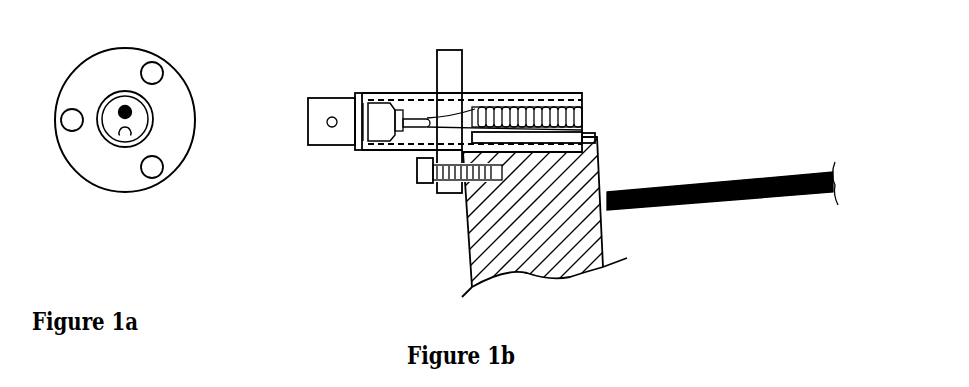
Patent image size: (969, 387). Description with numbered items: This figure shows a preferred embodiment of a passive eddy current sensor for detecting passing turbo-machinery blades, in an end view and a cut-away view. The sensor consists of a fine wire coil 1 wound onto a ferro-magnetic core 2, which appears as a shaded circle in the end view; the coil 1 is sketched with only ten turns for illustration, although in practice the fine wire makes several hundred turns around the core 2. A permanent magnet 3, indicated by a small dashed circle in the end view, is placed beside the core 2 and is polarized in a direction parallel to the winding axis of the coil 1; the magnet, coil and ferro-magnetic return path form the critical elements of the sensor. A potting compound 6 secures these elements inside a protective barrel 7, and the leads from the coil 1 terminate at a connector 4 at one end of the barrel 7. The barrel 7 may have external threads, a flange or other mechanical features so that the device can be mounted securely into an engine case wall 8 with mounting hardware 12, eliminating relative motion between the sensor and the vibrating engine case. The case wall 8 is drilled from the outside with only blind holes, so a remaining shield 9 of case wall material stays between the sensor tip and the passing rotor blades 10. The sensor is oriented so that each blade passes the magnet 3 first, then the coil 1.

The coil 1 is at (537, 106).
The core 2 is at (580, 113).
The magnet 3 is at (587, 125).
The connector 4 is at (352, 96).
The potting compound 6 is at (463, 105).
The barrel 7 is at (495, 92).
The case wall 8 is at (600, 167).
The shield 9 is at (593, 132).
The rotor blades 10 is at (720, 183).
The mounting hardware 12 is at (415, 185).